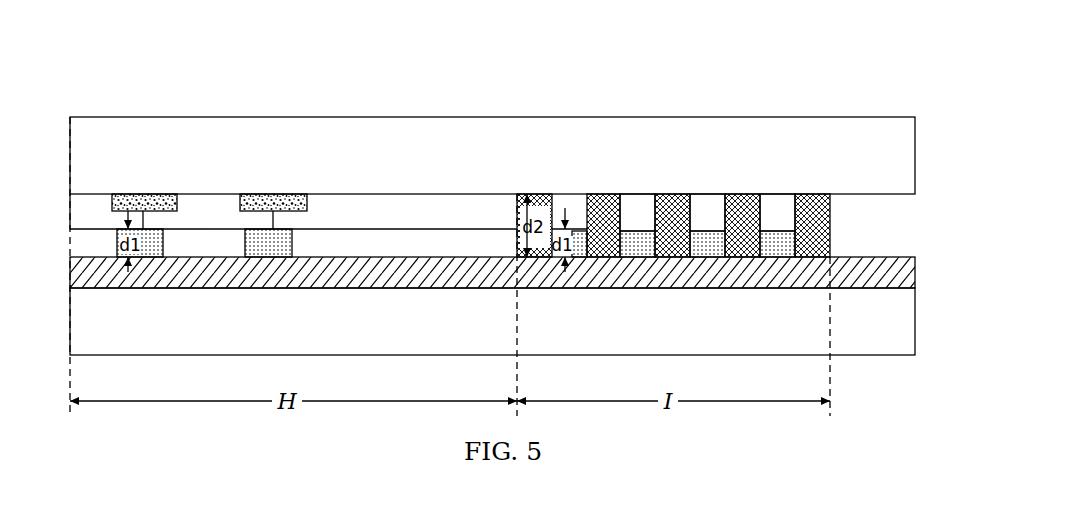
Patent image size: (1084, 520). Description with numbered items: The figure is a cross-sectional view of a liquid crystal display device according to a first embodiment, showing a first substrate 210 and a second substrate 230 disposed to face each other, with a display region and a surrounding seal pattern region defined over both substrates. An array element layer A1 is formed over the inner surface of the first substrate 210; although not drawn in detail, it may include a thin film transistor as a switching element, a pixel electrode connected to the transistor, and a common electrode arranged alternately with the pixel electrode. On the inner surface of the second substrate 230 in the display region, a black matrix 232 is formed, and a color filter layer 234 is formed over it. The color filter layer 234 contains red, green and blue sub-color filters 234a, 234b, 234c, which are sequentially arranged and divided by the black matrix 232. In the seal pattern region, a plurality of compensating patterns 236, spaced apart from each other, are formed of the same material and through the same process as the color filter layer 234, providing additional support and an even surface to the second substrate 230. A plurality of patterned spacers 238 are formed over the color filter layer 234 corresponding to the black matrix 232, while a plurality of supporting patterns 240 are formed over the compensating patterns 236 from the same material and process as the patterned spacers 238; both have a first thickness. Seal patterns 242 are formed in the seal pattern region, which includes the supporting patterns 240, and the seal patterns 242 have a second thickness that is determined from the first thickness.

The first substrate 210 is at (890, 337).
The second substrate 230 is at (889, 175).
The black matrix 232 is at (142, 194).
The color filter layer 234 is at (92, 43).
The red sub-color filter 234a is at (93, 202).
The green sub-color filter 234b is at (213, 202).
The blue sub-color filter 234c is at (358, 202).
The compensating pattern 236 is at (572, 210).
The patterned spacer 238 is at (156, 236).
The supporting pattern 240 is at (576, 245).
The seal pattern 242 is at (534, 194).
The array element layer A1 is at (916, 258).